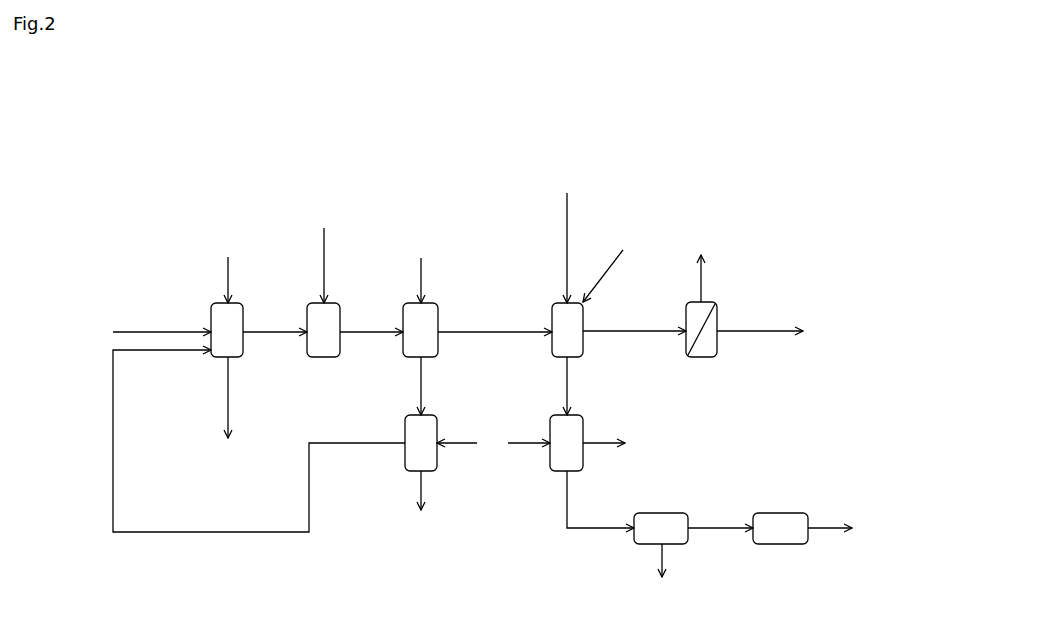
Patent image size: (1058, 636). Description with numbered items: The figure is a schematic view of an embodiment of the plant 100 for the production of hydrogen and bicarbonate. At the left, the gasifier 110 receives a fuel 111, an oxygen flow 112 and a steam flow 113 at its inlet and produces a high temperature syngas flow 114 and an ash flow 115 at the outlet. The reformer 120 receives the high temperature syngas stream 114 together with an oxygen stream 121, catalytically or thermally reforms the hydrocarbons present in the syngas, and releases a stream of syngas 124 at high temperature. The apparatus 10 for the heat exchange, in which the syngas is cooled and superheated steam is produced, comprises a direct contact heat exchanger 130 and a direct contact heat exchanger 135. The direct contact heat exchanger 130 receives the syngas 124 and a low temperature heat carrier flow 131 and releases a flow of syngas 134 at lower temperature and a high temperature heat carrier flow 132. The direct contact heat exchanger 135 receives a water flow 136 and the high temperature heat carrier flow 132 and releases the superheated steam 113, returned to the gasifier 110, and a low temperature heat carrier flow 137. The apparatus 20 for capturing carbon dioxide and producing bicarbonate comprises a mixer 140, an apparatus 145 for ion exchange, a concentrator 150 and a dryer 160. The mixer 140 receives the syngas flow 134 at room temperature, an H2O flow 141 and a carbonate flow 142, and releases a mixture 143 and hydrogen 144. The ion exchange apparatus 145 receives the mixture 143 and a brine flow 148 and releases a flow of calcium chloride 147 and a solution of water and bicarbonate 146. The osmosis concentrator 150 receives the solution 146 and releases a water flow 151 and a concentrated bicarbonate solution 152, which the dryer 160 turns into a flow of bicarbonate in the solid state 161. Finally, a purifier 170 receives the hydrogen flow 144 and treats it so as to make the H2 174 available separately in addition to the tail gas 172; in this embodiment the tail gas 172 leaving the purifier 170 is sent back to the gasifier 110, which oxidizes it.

The plant 100 is at (140, 129).
The apparatus for the heat exchange 10 is at (380, 221).
The apparatus for the capture of CO2 and production of bicarbonate 20 is at (528, 157).
The gasifier 110 is at (228, 323).
The fuel 111 is at (227, 278).
The oxygen flow 112 is at (165, 328).
The steam flow 113 is at (165, 353).
The high temperature syngas flow 114 is at (287, 330).
The ash flow 115 is at (225, 418).
The reformer 120 is at (332, 352).
The oxygen stream 121 is at (322, 290).
The stream of syngas 124 is at (355, 333).
The direct contact heat exchanger 130 is at (437, 350).
The low temperature heat carrier flow 131 is at (422, 277).
The high temperature heat carrier flow 132 is at (420, 363).
The flow of syngas 134 is at (473, 328).
The direct contact heat exchanger 135 is at (410, 460).
The water flow 136 is at (457, 440).
The low temperature heat carrier flow 137 is at (423, 490).
The mixer 140 is at (568, 323).
The H2O flow 141 is at (568, 258).
The carbonate flow 142 is at (607, 270).
The mixture 143 is at (568, 380).
The hydrogen 144 is at (647, 333).
The apparatus for ion exchange 145 is at (563, 462).
The solution of water and bicarbonate 146 is at (567, 485).
The flow of CaCl2 147 is at (615, 450).
The brine flow 148 is at (533, 447).
The concentrator 150 is at (670, 513).
The water flow 151 is at (660, 568).
The concentrated bicarbonate solution 152 is at (720, 532).
The dryer 160 is at (790, 513).
The flow of bicarbonate in the solid state 161 is at (830, 530).
The purifier 170 is at (712, 350).
The tail gas 172 is at (703, 288).
The H2 174 is at (752, 330).